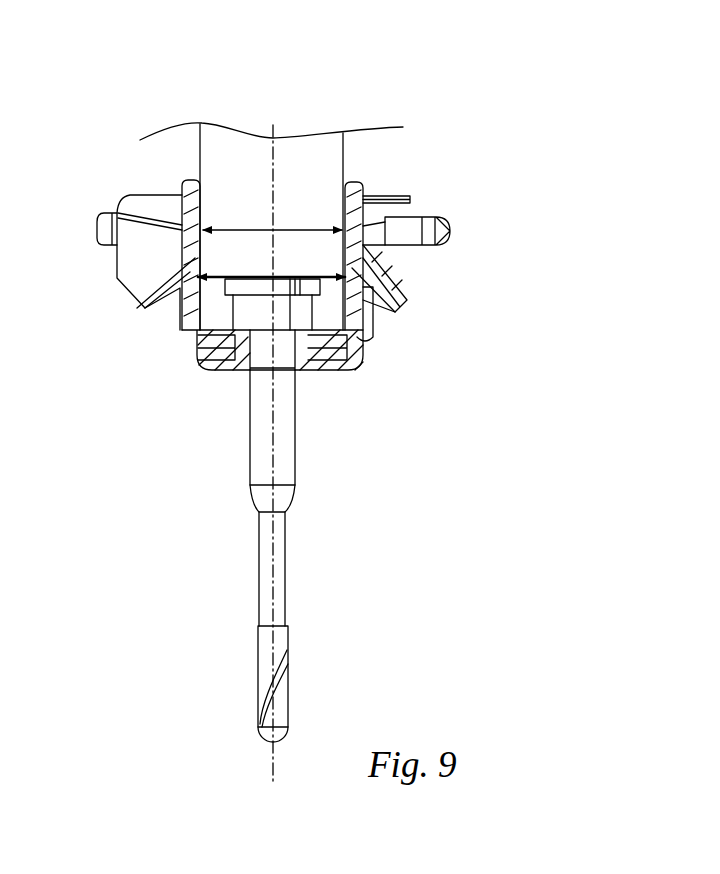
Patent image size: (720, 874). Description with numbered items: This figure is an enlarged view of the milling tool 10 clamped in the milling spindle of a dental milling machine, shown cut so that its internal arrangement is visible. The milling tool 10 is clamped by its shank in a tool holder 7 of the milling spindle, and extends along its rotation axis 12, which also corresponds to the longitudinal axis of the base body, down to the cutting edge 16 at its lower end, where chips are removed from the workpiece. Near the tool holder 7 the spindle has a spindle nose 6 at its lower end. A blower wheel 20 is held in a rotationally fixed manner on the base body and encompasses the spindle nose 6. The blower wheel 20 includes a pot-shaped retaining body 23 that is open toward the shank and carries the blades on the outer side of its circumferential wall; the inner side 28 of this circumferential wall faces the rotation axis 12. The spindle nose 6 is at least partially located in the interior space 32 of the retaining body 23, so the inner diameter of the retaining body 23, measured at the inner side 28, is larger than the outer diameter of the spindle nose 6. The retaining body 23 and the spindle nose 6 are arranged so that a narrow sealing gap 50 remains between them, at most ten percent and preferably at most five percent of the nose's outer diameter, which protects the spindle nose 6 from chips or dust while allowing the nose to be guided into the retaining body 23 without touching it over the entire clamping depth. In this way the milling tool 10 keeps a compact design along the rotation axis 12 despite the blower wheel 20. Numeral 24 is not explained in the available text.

The milling tool 10 is at (218, 550).
The rotation axis 12 is at (275, 131).
The cutting edge 16 is at (258, 664).
The blower wheel 20 is at (383, 250).
The retaining body 23 is at (367, 195).
The pin 24 is at (445, 216).
The inner side 28 is at (352, 280).
The interior space 32 is at (248, 211).
The sealing gap 50 is at (195, 259).
The spindle nose 6 is at (347, 267).
The tool holder 7 is at (233, 322).